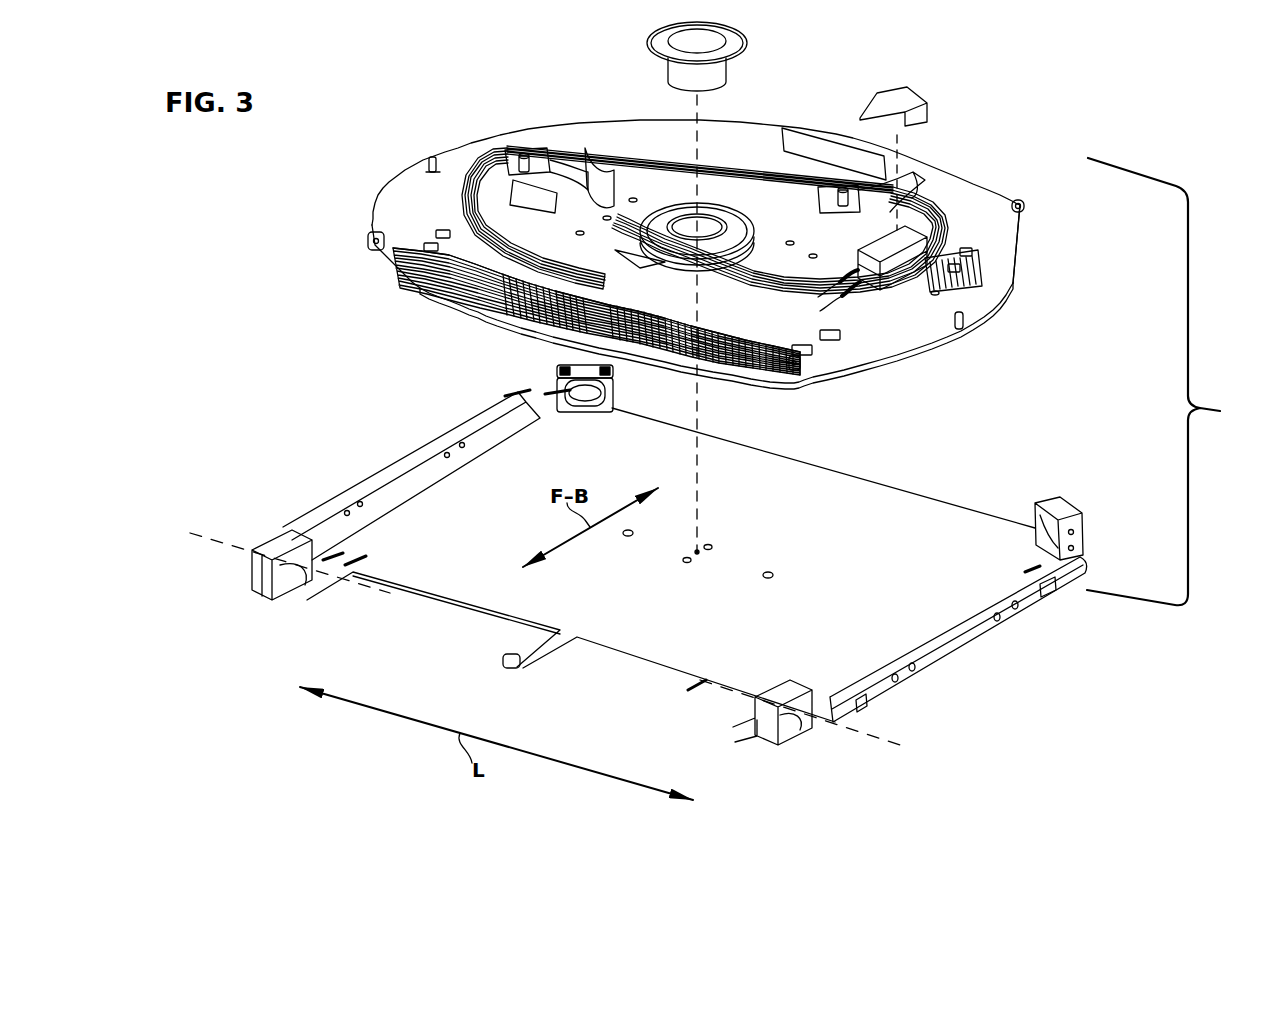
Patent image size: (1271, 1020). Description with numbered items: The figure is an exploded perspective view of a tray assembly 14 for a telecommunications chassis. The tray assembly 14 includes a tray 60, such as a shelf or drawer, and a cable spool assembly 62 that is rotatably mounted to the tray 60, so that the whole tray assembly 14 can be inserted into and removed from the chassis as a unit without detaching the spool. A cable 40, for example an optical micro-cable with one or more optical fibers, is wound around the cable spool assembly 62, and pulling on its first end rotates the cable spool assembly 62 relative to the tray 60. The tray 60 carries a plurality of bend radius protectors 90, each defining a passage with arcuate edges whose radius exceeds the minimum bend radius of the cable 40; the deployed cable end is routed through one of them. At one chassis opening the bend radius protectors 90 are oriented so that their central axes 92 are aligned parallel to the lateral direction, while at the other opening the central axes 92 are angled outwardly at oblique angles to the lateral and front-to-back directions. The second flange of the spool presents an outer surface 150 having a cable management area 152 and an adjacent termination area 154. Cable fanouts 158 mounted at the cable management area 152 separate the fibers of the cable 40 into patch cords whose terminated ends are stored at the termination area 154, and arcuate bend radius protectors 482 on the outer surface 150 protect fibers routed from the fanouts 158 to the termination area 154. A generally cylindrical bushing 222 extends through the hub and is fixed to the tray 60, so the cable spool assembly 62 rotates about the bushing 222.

The tray assembly 14 is at (1170, 381).
The cable 40 is at (470, 265).
The tray 60 is at (975, 648).
The cable spool assembly 62 is at (530, 128).
The bend radius protectors 90 is at (557, 380).
The central axes 92 is at (862, 732).
The outer surface 150 is at (878, 348).
The cable management area 152 is at (960, 225).
The termination area 154 is at (480, 268).
The cable fanouts 158 is at (880, 248).
The bushing 222 is at (760, 42).
The bend radius protectors 482 is at (616, 196).